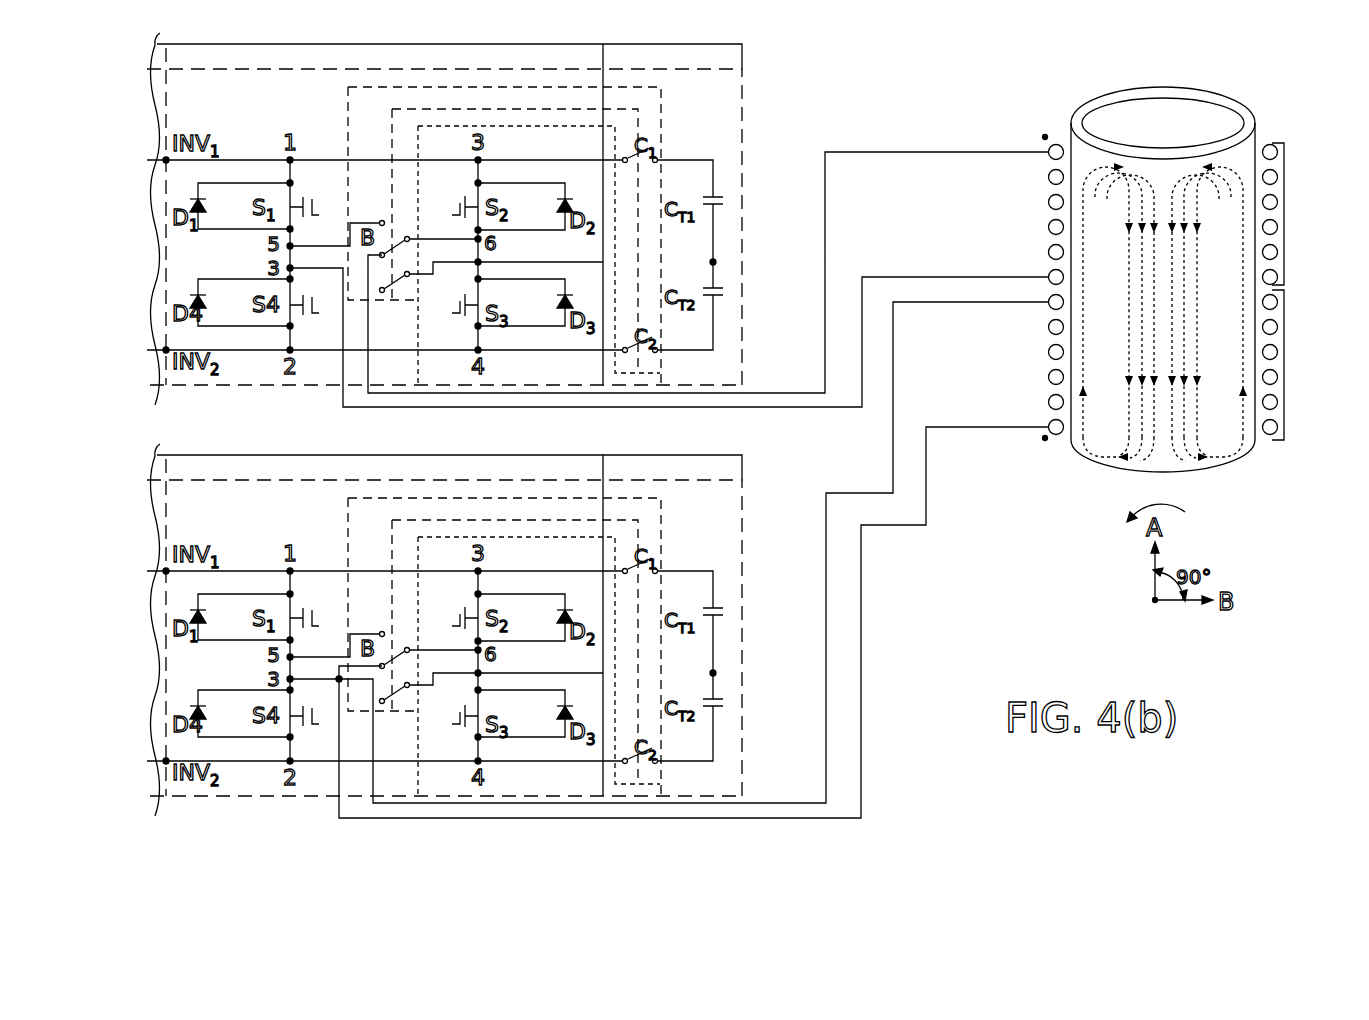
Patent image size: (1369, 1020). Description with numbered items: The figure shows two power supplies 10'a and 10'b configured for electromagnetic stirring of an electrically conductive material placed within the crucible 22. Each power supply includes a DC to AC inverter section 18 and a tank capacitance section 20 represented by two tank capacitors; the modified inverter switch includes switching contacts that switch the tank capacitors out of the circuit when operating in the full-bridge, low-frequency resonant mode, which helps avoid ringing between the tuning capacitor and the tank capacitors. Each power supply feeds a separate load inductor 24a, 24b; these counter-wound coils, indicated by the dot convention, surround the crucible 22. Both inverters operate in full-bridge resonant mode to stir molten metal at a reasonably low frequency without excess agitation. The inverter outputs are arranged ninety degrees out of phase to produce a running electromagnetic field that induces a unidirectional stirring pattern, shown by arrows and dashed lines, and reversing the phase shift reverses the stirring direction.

The DC to AC inverter section 18 is at (385, 44).
The tank capacitance section 20 is at (672, 44).
The power supply 10'a is at (590, 231).
The power supply 10'b is at (598, 614).
The crucible 22 is at (1210, 104).
The load inductor 24a is at (1284, 215).
The load inductor 24b is at (1284, 365).